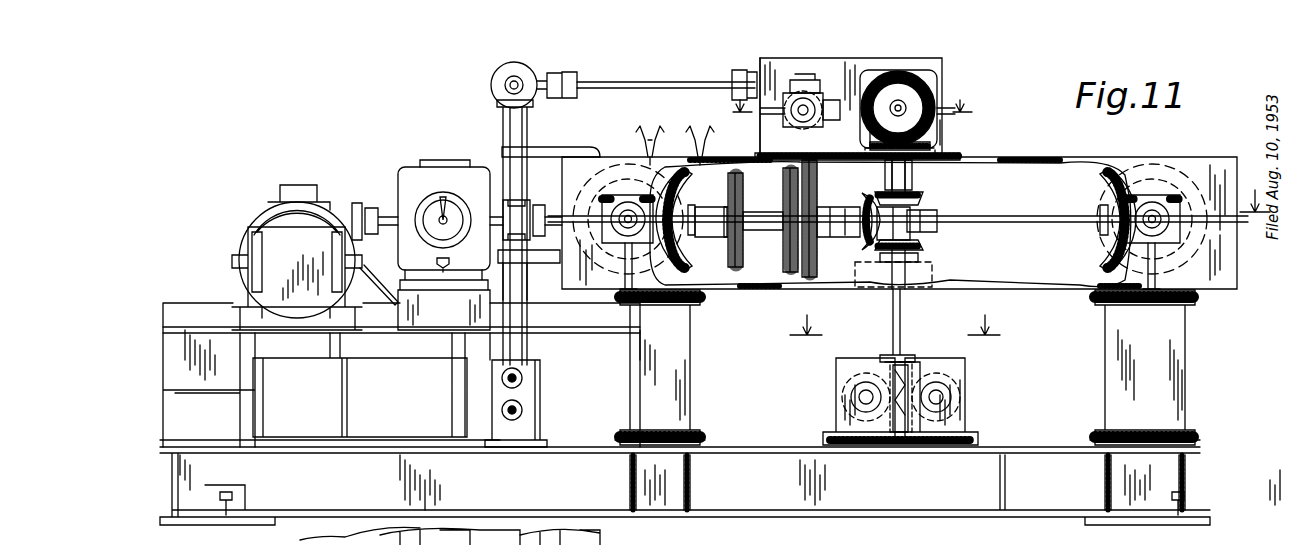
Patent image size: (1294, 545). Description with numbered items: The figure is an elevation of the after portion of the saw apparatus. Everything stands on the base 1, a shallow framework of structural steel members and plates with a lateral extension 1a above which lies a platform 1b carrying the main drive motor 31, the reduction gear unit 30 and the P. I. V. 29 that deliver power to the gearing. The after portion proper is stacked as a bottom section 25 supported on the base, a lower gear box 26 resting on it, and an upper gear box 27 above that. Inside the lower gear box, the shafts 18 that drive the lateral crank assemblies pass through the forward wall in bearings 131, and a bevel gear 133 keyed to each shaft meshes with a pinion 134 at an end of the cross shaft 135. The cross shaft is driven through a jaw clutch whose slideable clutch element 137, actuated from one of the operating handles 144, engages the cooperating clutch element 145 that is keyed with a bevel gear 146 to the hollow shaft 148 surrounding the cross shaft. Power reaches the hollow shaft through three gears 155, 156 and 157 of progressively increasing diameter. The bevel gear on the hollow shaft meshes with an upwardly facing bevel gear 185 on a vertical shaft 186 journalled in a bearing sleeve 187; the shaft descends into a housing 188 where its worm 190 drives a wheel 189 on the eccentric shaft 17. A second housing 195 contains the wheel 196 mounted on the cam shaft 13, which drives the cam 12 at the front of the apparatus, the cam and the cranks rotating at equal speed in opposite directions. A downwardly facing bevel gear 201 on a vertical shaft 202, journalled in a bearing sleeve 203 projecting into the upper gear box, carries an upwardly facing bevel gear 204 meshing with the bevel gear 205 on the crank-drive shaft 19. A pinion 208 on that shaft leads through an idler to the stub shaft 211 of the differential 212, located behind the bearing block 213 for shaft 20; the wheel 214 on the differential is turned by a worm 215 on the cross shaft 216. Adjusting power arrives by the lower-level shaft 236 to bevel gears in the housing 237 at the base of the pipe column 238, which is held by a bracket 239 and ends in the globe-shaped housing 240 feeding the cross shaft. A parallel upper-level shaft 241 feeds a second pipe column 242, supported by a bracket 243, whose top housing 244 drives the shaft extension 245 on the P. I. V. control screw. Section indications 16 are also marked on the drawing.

The base 1 is at (1213, 446).
The extension 1a is at (648, 437).
The platform 1b is at (619, 338).
The cam 12 is at (540, 205).
The cam shaft 13 is at (950, 397).
The section line 16 is at (894, 326).
The eccentric shaft 17 is at (953, 106).
The shafts 18 is at (1155, 215).
The shaft 19 is at (905, 102).
The shaft 20 is at (830, 100).
The bottom section 25 is at (1199, 331).
The lower gear box 26 is at (1247, 157).
The upper gear box 27 is at (954, 60).
The P. I. V. 29 is at (398, 182).
The reduction gear unit 30 is at (297, 195).
The main drive motor 31 is at (262, 215).
The bearings 131 is at (1190, 193).
The bevel gear 133 is at (1095, 185).
The pinions 134 is at (1095, 243).
The cross shaft 135 is at (1018, 214).
The clutch element 137 is at (912, 215).
The operating handles 144 is at (698, 142).
The clutch element 145 is at (925, 232).
The bevel gear 146 is at (860, 240).
The hollow shaft 148 is at (836, 193).
The gear 155 is at (744, 250).
The gear 156 is at (785, 210).
The gear 157 is at (815, 192).
The bevel gear 185 is at (925, 252).
The vertical shaft 186 is at (902, 310).
The bearing sleeve 187 is at (935, 280).
The housing 188 is at (830, 372).
The wheel 189 is at (843, 400).
The worm 190 is at (892, 378).
The second housing 195 is at (973, 374).
The wheel 196 is at (955, 400).
The bevel gear 201 is at (868, 200).
The vertical shaft 202 is at (915, 190).
The bearing sleeve 203 is at (935, 155).
The bevel gear 204 is at (930, 145).
The bevel gear 205 is at (920, 110).
The pinion 208 is at (620, 536).
The stub shaft 211 is at (392, 532).
The differential 212 is at (779, 122).
The bearing block 213 is at (800, 125).
The wheel 214 is at (828, 125).
The worm 215 is at (800, 78).
The cross shaft 216 is at (640, 82).
The lower-level shaft 236 is at (522, 410).
The housing 237 is at (540, 370).
The pipe column 238 is at (528, 128).
The bracket 239 is at (555, 150).
The housing 240 is at (530, 75).
The upper-level shaft 241 is at (522, 378).
The second pipe column 242 is at (530, 282).
The bracket 243 is at (548, 247).
The housing 244 is at (470, 190).
The shaft extension 245 is at (478, 245).